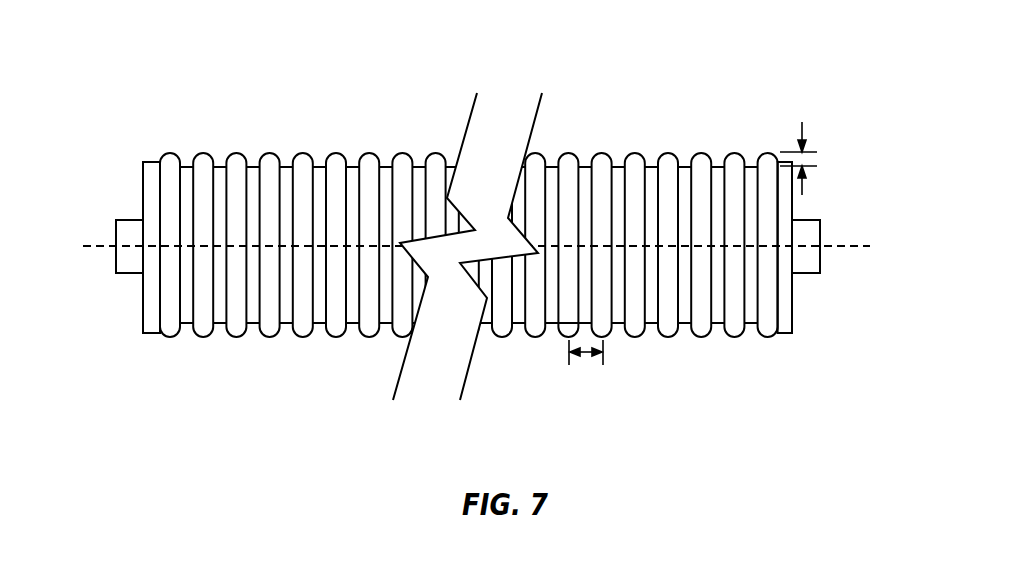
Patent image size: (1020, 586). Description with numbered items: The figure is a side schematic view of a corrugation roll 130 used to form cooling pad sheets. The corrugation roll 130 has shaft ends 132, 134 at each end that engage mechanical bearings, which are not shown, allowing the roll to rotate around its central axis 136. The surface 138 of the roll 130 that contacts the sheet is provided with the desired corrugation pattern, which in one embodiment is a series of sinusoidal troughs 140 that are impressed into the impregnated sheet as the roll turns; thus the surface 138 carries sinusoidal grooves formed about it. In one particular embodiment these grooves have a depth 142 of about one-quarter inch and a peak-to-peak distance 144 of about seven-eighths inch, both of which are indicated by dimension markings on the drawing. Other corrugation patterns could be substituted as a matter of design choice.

The corrugation roll 130 is at (785, 88).
The shaft end 132 is at (130, 219).
The shaft end 134 is at (800, 214).
The central axis 136 is at (847, 248).
The surface 138 is at (332, 153).
The sinusoidal trough 140 is at (272, 336).
The depth 142 is at (812, 157).
The peak-to-peak distance 144 is at (588, 358).